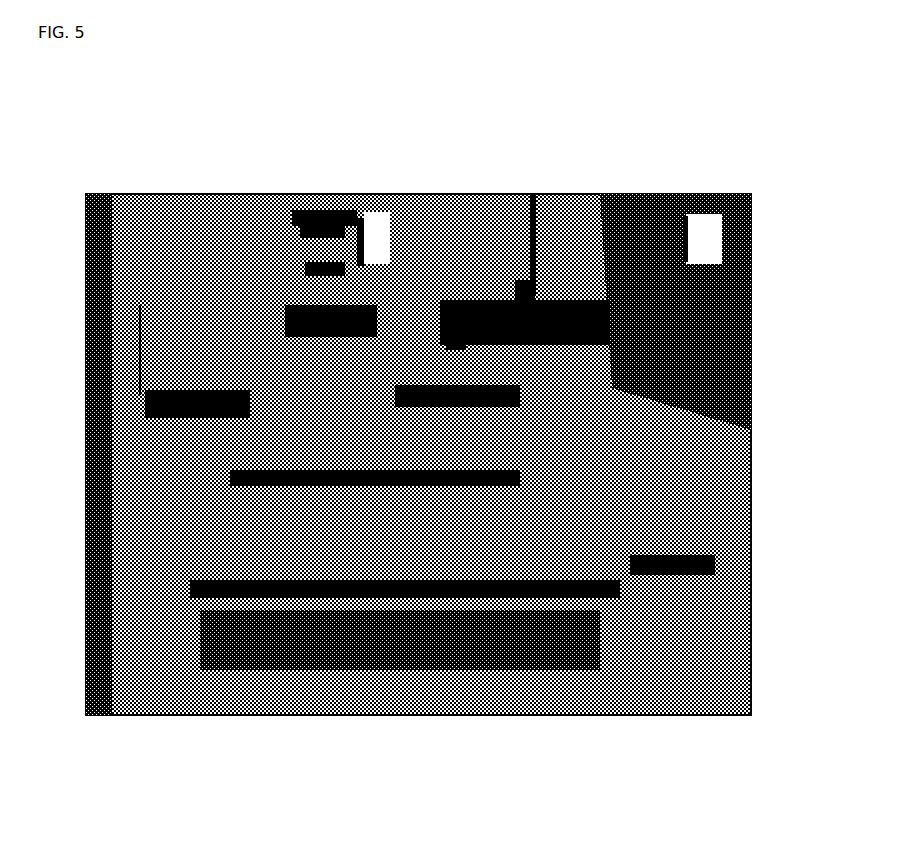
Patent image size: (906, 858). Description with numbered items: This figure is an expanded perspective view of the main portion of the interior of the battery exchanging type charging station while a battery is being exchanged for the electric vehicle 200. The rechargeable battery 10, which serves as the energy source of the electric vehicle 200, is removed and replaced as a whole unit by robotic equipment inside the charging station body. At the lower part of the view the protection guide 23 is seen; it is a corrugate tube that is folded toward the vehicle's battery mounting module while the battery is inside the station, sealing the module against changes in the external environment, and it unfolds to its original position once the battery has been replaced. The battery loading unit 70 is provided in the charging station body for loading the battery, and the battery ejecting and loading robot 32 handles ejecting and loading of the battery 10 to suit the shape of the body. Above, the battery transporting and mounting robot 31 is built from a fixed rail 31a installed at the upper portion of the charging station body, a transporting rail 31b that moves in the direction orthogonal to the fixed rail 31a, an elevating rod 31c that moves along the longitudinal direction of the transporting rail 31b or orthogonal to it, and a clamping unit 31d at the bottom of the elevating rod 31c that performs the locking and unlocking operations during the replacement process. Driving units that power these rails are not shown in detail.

The electric vehicle 200 is at (492, 716).
The protection guide 23 is at (378, 714).
The battery ejecting and loading robot 32 is at (195, 385).
The battery loading unit 70 is at (136, 341).
The rechargeable battery 10 is at (283, 318).
The battery transporting and mounting robot 31 is at (706, 156).
The fixed rail 31a is at (361, 214).
The transporting rail 31b is at (298, 228).
The elevating rod 31c is at (300, 206).
The clamping unit 31d is at (303, 268).